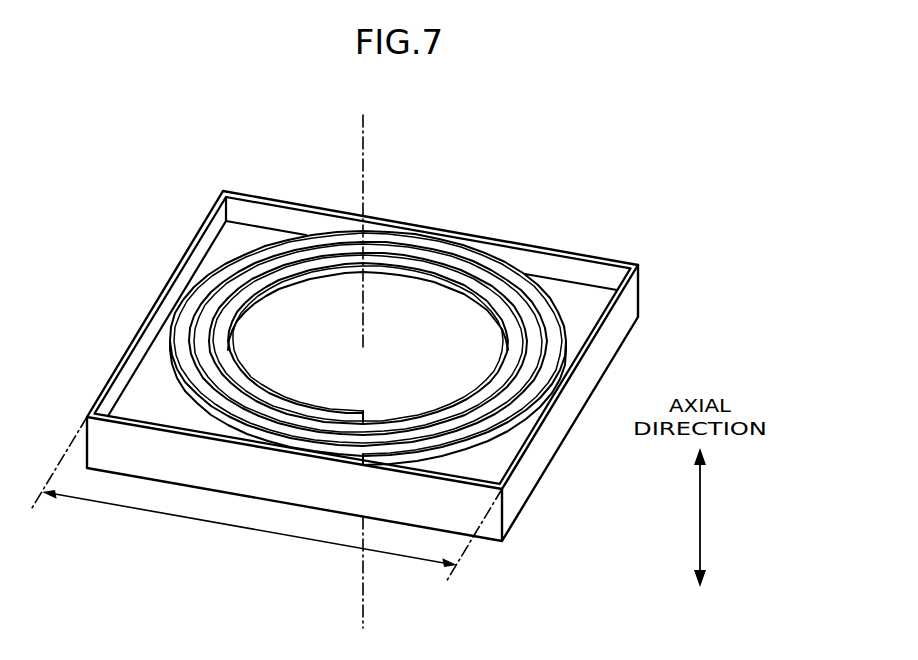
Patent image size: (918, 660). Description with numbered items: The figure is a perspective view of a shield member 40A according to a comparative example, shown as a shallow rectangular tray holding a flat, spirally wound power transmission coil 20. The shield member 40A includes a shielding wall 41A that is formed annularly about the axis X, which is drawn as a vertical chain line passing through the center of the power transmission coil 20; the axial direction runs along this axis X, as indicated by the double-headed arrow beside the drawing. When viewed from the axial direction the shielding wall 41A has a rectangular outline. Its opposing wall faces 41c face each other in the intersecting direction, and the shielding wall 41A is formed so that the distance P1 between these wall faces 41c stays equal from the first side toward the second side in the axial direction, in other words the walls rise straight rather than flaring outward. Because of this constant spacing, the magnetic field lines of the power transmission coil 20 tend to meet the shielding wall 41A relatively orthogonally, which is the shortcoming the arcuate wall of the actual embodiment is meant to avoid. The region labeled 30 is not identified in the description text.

The power transmission coil 20 is at (430, 267).
The core 30 is at (457, 323).
The shield member 40A is at (288, 201).
The shielding wall 41A is at (363, 313).
The wall faces 41c is at (198, 250).
The distance P1 is at (267, 499).
The axis X is at (363, 360).